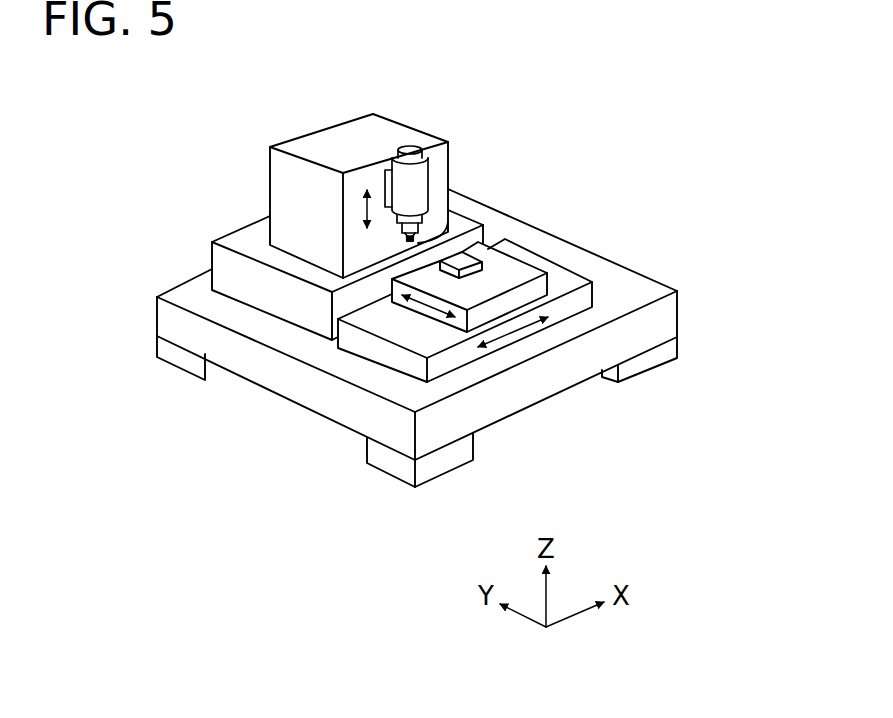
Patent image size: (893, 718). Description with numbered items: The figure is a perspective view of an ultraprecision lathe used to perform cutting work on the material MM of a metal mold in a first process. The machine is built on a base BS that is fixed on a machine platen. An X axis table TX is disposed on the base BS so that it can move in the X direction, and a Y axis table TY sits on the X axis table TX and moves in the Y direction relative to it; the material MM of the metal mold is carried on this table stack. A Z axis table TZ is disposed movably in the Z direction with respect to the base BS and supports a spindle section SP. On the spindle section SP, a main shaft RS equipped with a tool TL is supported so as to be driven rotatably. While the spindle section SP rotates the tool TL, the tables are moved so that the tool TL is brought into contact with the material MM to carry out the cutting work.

The base BS is at (665, 317).
The X axis table TX is at (518, 334).
The Y axis table TY is at (421, 308).
The Z axis table TZ is at (270, 172).
The material of the metal mold MM is at (485, 262).
The spindle section SP is at (420, 185).
The tool TL is at (402, 238).
The main shaft RS is at (403, 238).